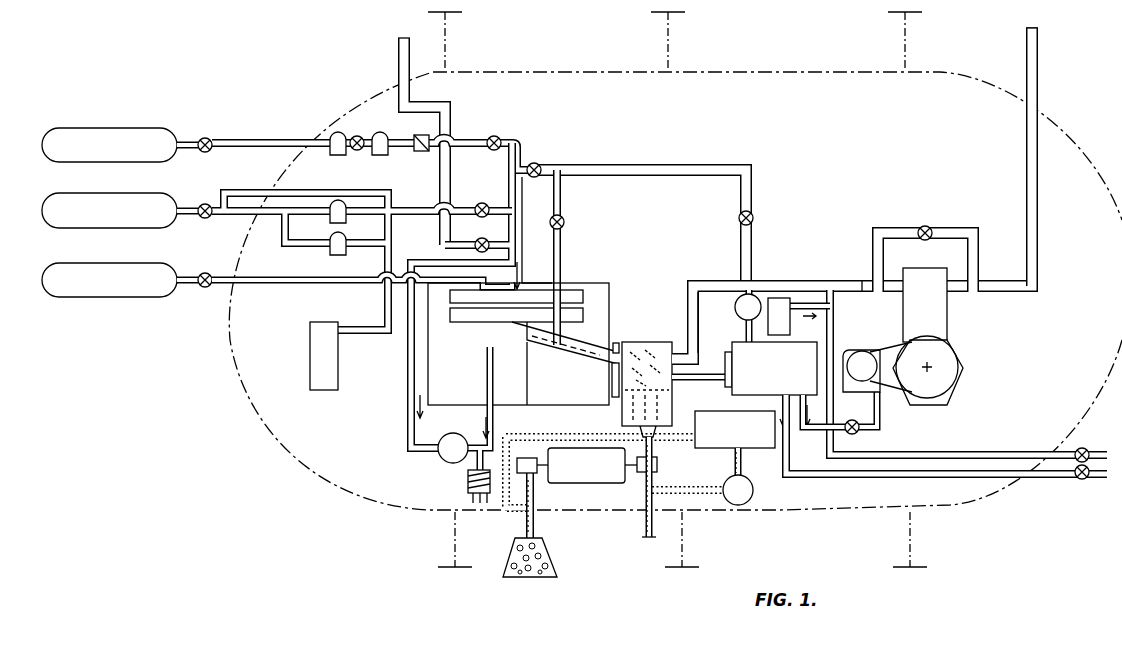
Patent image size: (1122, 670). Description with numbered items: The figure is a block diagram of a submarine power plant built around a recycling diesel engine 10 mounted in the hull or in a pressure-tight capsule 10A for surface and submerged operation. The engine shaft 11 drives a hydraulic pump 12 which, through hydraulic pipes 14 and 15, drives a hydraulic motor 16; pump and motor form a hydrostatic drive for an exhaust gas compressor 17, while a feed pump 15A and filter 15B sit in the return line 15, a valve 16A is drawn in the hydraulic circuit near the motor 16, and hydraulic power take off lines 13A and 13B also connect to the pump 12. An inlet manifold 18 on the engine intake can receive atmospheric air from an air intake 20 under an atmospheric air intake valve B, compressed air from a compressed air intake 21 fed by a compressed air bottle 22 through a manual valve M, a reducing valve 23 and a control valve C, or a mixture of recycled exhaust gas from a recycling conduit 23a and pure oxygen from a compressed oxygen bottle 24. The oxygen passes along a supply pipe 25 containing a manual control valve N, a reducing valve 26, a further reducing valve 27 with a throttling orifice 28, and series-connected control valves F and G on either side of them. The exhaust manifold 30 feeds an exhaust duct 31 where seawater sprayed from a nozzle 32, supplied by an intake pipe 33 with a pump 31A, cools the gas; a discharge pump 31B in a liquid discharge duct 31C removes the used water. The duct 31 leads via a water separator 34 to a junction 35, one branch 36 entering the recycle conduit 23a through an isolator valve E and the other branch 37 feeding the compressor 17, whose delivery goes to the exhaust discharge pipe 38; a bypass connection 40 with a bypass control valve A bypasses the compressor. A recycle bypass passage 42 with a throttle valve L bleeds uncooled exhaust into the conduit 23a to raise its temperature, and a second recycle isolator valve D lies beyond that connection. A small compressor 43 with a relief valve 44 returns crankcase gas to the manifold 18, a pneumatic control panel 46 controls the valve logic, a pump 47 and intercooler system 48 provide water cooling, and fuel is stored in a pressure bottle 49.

The diesel engine 10 is at (600, 298).
The pressure-tight capsule 10A is at (852, 68).
The engine shaft 11 is at (686, 372).
The hydraulic pump 12 is at (771, 384).
The hydraulic power take off line 13A is at (905, 478).
The hydraulic power take off line 13B is at (1003, 455).
The hydraulic pipe 14 is at (803, 433).
The return line 15 is at (800, 303).
The feed pump 15A is at (735, 308).
The filter 15B is at (776, 298).
The hydraulic motor 16 is at (864, 358).
The valve 16A is at (862, 428).
The exhaust gas compressor 17 is at (942, 368).
The inlet manifold 18 is at (537, 283).
The air intake 20 is at (399, 62).
The compressed air intake 21 is at (414, 216).
The compressed air bottle 22 is at (127, 195).
The reducing valve 23 is at (348, 214).
The recycling conduit 23a is at (640, 163).
The compressed oxygen bottle 24 is at (127, 130).
The oxygen supply pipe 25 is at (258, 140).
The reducing valve 26 is at (332, 136).
The further reducing valve 27 is at (380, 133).
The throttling orifice 28 is at (422, 151).
The exhaust manifold 30 is at (465, 322).
The exhaust duct 31 is at (588, 362).
The pump 31A is at (540, 477).
The discharge pump 31B is at (625, 482).
The liquid discharge duct 31C is at (645, 531).
The nozzle 32 is at (553, 352).
The intake pipe 33 is at (535, 530).
The water separator 34 is at (647, 342).
The junction 35 is at (740, 272).
The branch 36 is at (740, 240).
The branch 37 is at (865, 280).
The exhaust discharge pipe 38 is at (1025, 141).
The bypass connection 40 is at (952, 228).
The recycle bypass passage 42 is at (563, 252).
The small compressor 43 is at (447, 434).
The relief valve 44 is at (468, 478).
The pneumatic control panel 46 is at (338, 366).
The pump 47 is at (753, 492).
The intercooler system 48 is at (735, 429).
The pressure bottle 49 is at (132, 265).
The bypass control valve A is at (922, 221).
The atmospheric air intake valve B is at (461, 295).
The control valve C is at (482, 198).
The second recycle isolator valve D is at (534, 158).
The isolator valve E is at (753, 212).
The control valve F is at (357, 154).
The control valve G is at (494, 151).
The throttle valve L is at (562, 223).
The manual valve M is at (205, 204).
The manual control valve N is at (205, 138).